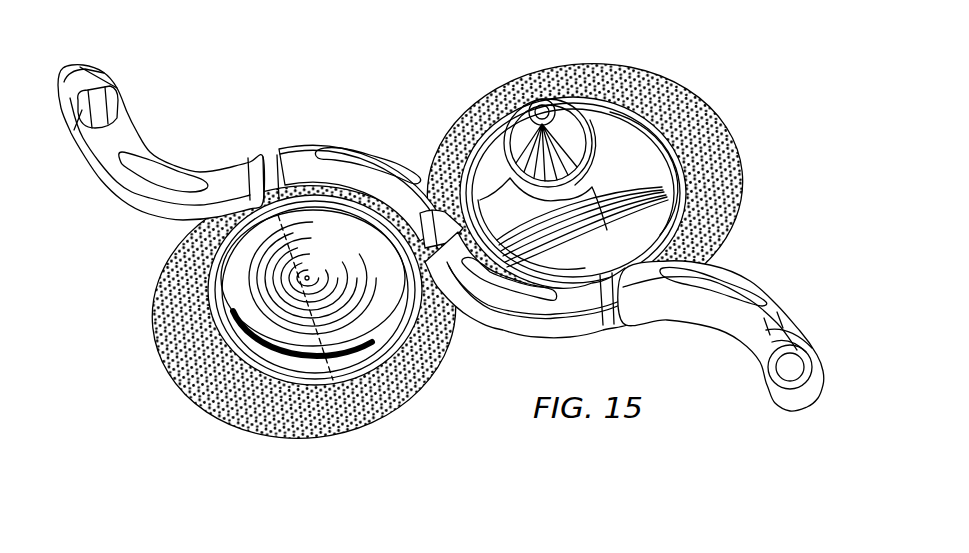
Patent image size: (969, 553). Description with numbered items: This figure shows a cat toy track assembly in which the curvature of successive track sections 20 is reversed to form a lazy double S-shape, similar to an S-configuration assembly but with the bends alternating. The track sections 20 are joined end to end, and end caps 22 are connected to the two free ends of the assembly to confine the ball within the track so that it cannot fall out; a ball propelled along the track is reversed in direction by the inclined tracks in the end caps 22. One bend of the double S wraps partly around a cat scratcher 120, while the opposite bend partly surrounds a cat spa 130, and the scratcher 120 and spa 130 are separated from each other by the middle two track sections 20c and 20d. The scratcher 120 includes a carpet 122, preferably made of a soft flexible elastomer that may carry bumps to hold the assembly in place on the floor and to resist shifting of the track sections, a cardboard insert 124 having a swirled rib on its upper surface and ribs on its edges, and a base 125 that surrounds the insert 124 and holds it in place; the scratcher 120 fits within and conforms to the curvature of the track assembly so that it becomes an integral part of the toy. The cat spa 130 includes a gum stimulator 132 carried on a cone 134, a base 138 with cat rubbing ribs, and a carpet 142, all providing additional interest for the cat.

The track section 20 is at (441, 238).
The end cap 22 is at (127, 93).
The middle track section 20c is at (356, 148).
The middle track section 20d is at (532, 341).
The cat scratcher 120 is at (214, 429).
The carpet 122 is at (377, 410).
The cardboard insert 124 is at (237, 318).
The base 125 is at (317, 373).
The cat spa 130 is at (627, 188).
The gum stimulator 132 is at (480, 180).
The cone 134 is at (600, 122).
The base 138 is at (633, 248).
The carpet 142 is at (718, 155).